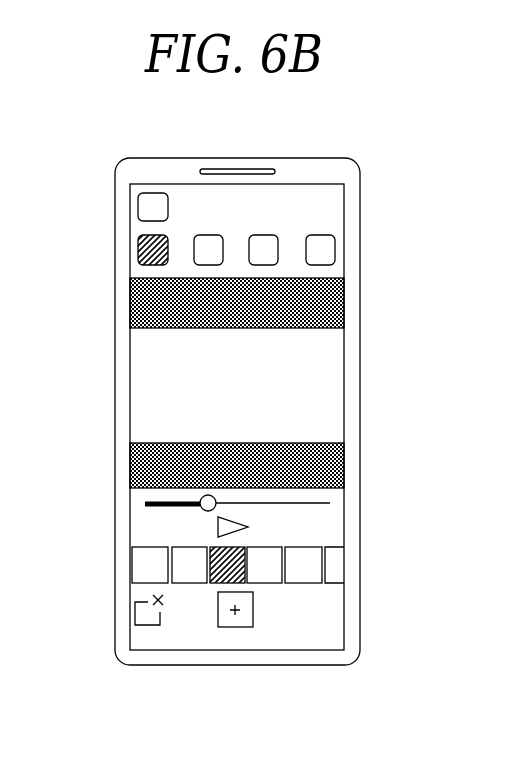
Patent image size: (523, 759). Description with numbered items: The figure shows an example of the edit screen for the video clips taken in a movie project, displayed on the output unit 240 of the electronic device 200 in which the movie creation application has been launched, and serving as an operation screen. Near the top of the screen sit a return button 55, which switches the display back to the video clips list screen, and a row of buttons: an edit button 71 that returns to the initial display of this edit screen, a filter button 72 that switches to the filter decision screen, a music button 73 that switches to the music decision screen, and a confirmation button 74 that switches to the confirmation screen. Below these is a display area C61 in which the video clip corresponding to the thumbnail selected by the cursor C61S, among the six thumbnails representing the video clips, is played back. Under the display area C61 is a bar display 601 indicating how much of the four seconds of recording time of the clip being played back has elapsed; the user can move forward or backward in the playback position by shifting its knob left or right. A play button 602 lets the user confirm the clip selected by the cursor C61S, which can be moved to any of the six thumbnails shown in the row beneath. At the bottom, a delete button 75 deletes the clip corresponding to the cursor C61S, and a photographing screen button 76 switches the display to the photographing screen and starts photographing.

The electronic device 200 is at (308, 158).
The output unit 240 is at (339, 211).
The return button 55 is at (147, 211).
The edit button 71 is at (147, 257).
The filter button 72 is at (210, 243).
The music button 73 is at (265, 243).
The confirmation button 74 is at (320, 243).
The display area C61 is at (168, 382).
The bar display 601 is at (200, 511).
The play button 602 is at (230, 530).
The cursor C61S is at (220, 578).
The delete button 75 is at (146, 609).
The photographing screen button 76 is at (246, 617).